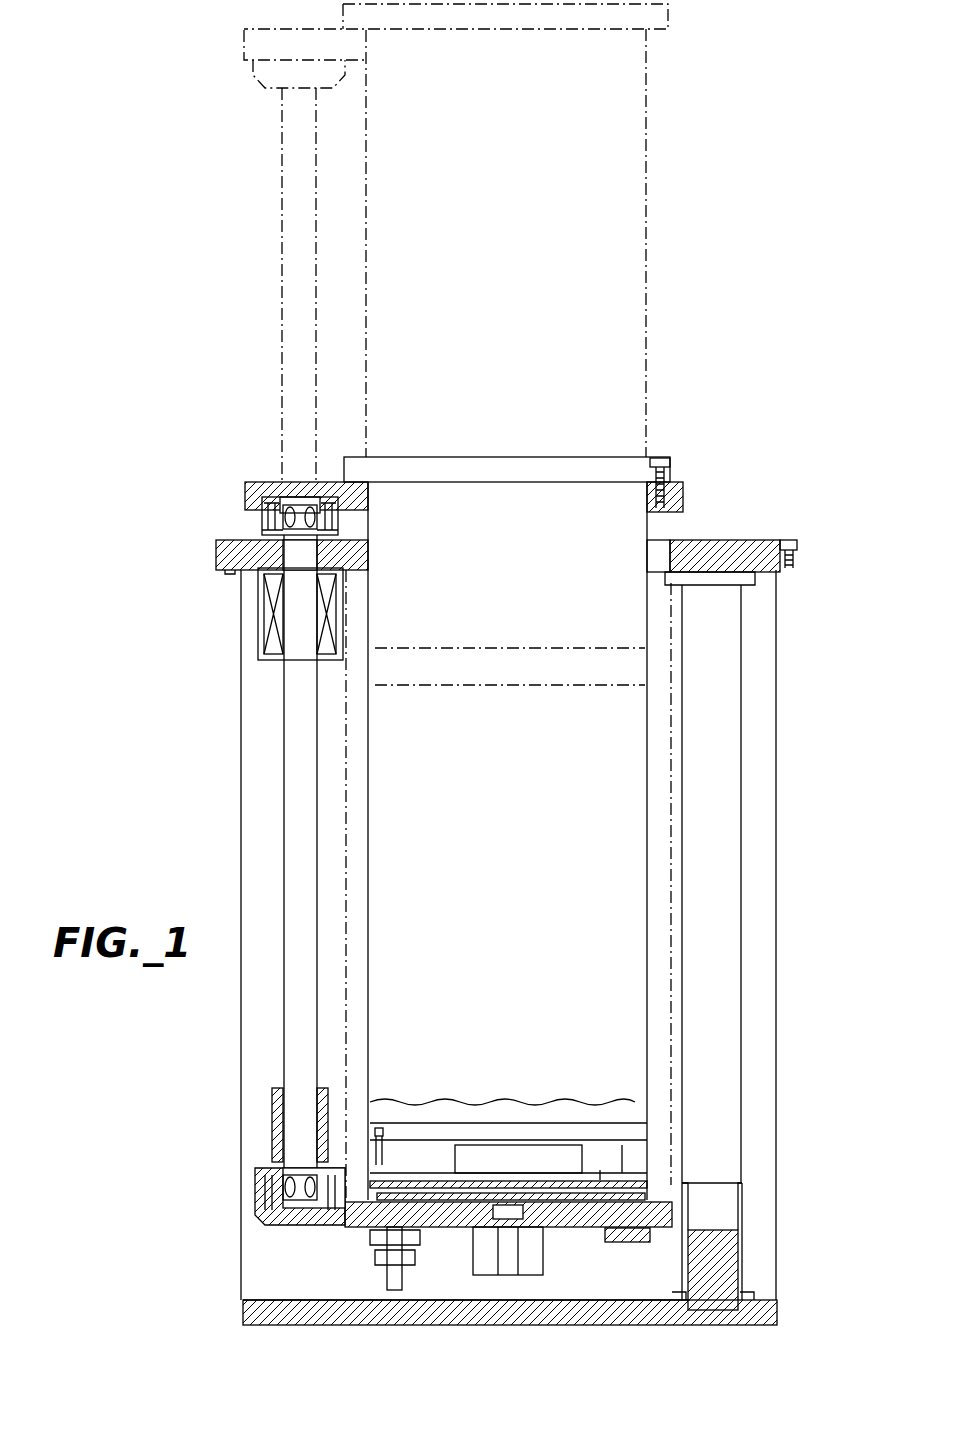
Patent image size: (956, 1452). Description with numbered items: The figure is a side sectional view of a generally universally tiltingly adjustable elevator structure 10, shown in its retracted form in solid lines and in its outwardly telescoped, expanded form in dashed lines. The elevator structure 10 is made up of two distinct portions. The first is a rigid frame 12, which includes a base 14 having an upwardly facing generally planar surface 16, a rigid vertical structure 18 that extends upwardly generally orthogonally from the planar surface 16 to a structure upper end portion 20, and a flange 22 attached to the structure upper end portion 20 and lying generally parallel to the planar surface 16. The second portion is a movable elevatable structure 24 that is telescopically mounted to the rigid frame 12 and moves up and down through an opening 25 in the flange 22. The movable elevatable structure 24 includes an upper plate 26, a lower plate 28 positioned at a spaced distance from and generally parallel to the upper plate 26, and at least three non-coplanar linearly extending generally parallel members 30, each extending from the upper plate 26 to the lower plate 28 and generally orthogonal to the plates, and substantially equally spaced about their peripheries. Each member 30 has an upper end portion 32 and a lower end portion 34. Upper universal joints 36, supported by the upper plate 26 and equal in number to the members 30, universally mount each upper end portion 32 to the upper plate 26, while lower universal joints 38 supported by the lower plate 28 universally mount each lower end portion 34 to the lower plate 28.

The elevator structure 10 is at (787, 617).
The rigid frame 12 is at (787, 1258).
The base 14 is at (243, 1312).
The planar surface 16 is at (272, 1300).
The rigid vertical structure 18 is at (240, 729).
The structure upper end portion 20 is at (228, 573).
The flange 22 is at (212, 553).
The movable elevatable structure 24 is at (648, 530).
The opening 25 is at (668, 558).
The upper plate 26 is at (628, 455).
The lower plate 28 is at (345, 1225).
The linearly extending generally parallel members 30 is at (283, 690).
The upper end portion 32 is at (262, 603).
The lower end portion 34 is at (300, 1172).
The upper universal joints 36 is at (248, 524).
The lower universal joints 38 is at (250, 1177).